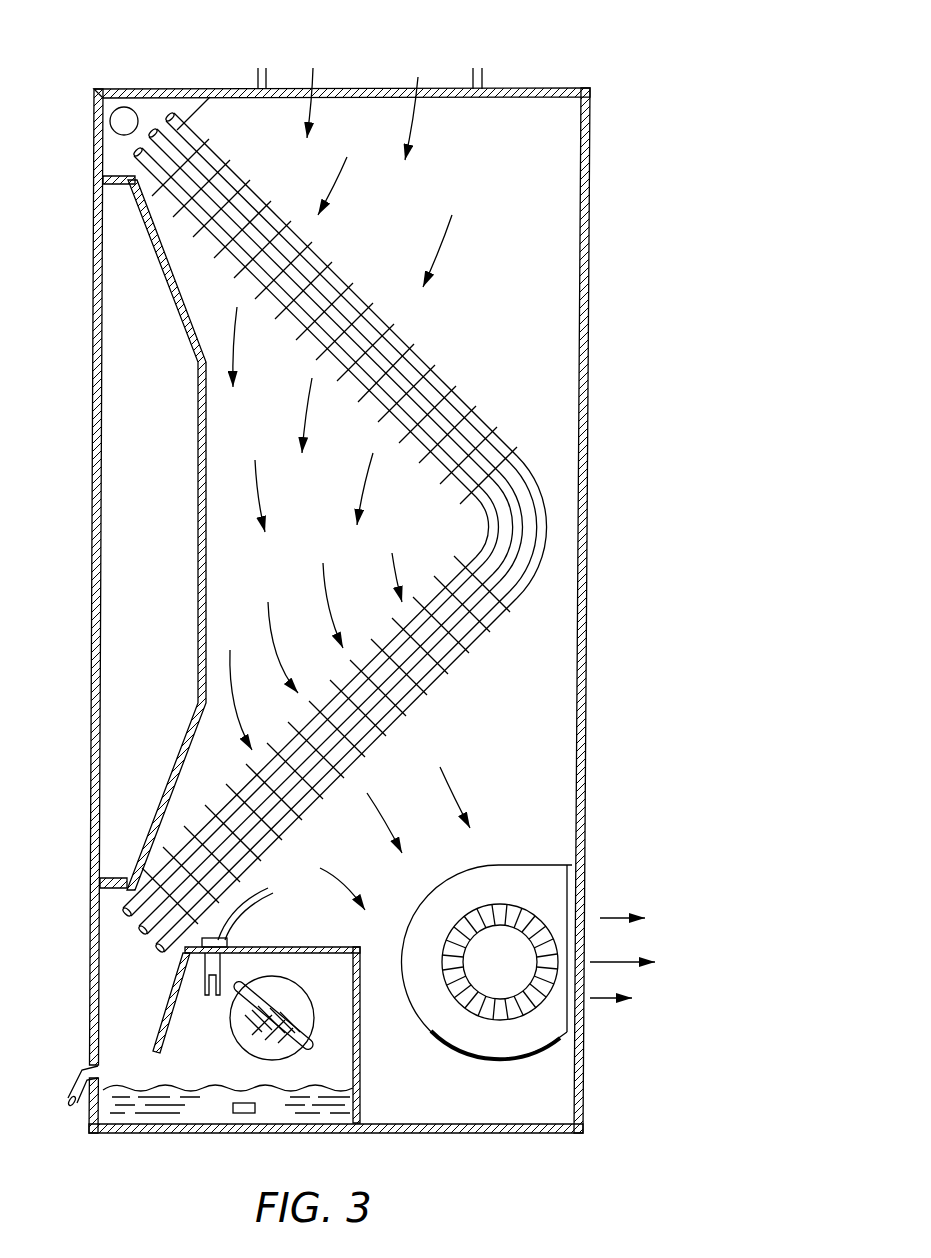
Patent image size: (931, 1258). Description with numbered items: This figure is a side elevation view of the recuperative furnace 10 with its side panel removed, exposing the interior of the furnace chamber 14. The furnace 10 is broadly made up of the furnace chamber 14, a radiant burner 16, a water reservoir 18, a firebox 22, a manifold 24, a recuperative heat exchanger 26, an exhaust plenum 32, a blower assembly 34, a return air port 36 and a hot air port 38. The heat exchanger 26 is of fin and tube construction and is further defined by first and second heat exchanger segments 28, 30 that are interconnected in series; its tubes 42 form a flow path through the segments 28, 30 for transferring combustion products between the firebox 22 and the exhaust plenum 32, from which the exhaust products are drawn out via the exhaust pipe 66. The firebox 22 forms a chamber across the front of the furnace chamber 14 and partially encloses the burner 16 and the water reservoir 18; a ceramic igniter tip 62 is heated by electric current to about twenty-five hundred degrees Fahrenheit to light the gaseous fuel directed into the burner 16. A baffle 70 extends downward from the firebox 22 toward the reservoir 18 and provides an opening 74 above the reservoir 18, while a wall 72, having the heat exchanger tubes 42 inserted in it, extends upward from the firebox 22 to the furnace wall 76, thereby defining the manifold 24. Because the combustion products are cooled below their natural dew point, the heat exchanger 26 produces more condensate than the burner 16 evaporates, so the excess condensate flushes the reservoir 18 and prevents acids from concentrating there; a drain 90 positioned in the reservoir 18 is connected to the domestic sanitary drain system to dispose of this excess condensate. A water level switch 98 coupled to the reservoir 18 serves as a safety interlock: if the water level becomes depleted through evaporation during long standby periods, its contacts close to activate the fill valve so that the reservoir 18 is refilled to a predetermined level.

The recuperative furnace 10 is at (360, 569).
The furnace chamber 14 is at (558, 298).
The radiant burner 16 is at (322, 1012).
The water reservoir 18 is at (212, 1112).
The firebox 22 is at (342, 975).
The manifold 24 is at (122, 1012).
The recuperative heat exchanger 26 is at (545, 553).
The first heat exchanger segment 28 is at (450, 687).
The second heat exchanger segment 30 is at (455, 377).
The exhaust plenum 32 is at (112, 160).
The blower assembly 34 is at (543, 1030).
The return air port 36 is at (360, 92).
The hot air port 38 is at (570, 890).
The heat exchanger tubes 42 is at (157, 949).
The ceramic igniter tip 62 is at (207, 973).
The exhaust pipe 66 is at (124, 118).
The baffle 70 is at (157, 1037).
The wall 72 is at (125, 884).
The opening 74 is at (148, 1068).
The furnace wall 76 is at (97, 330).
The drain 90 is at (66, 1110).
The water level switch 98 is at (247, 1112).